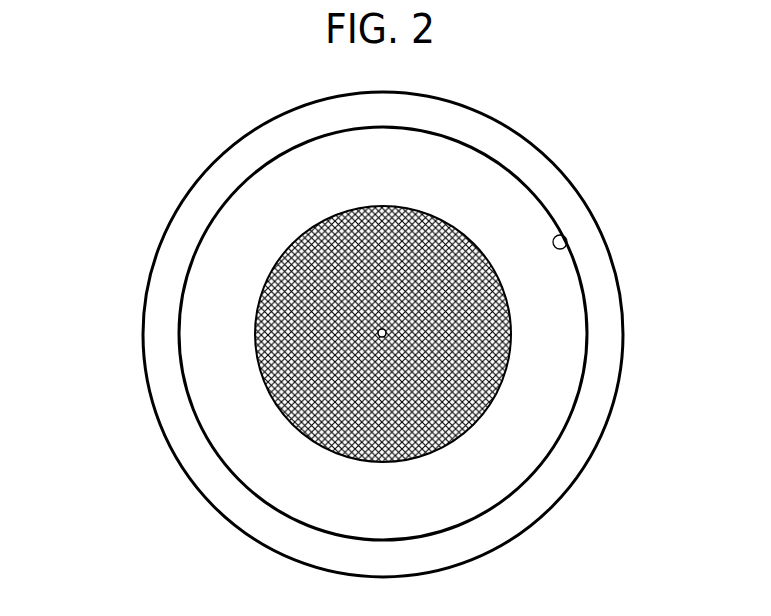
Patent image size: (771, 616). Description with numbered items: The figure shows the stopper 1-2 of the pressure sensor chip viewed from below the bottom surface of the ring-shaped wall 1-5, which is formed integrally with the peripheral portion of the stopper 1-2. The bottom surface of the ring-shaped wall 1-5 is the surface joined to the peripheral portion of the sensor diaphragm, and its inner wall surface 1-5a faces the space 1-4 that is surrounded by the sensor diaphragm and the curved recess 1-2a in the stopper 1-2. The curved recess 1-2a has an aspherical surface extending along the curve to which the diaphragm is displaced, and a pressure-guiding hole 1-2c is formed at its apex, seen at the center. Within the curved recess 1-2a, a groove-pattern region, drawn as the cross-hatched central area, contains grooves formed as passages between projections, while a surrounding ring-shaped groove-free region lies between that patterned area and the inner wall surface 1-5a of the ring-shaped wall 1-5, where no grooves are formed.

The stopper 1-2 is at (183, 197).
The curved recess 1-2a is at (448, 262).
The pressure-guiding hole 1-2c is at (380, 333).
The space 1-4 is at (277, 462).
The ring-shaped wall 1-5 is at (600, 313).
The inner wall surface 1-5a is at (560, 228).